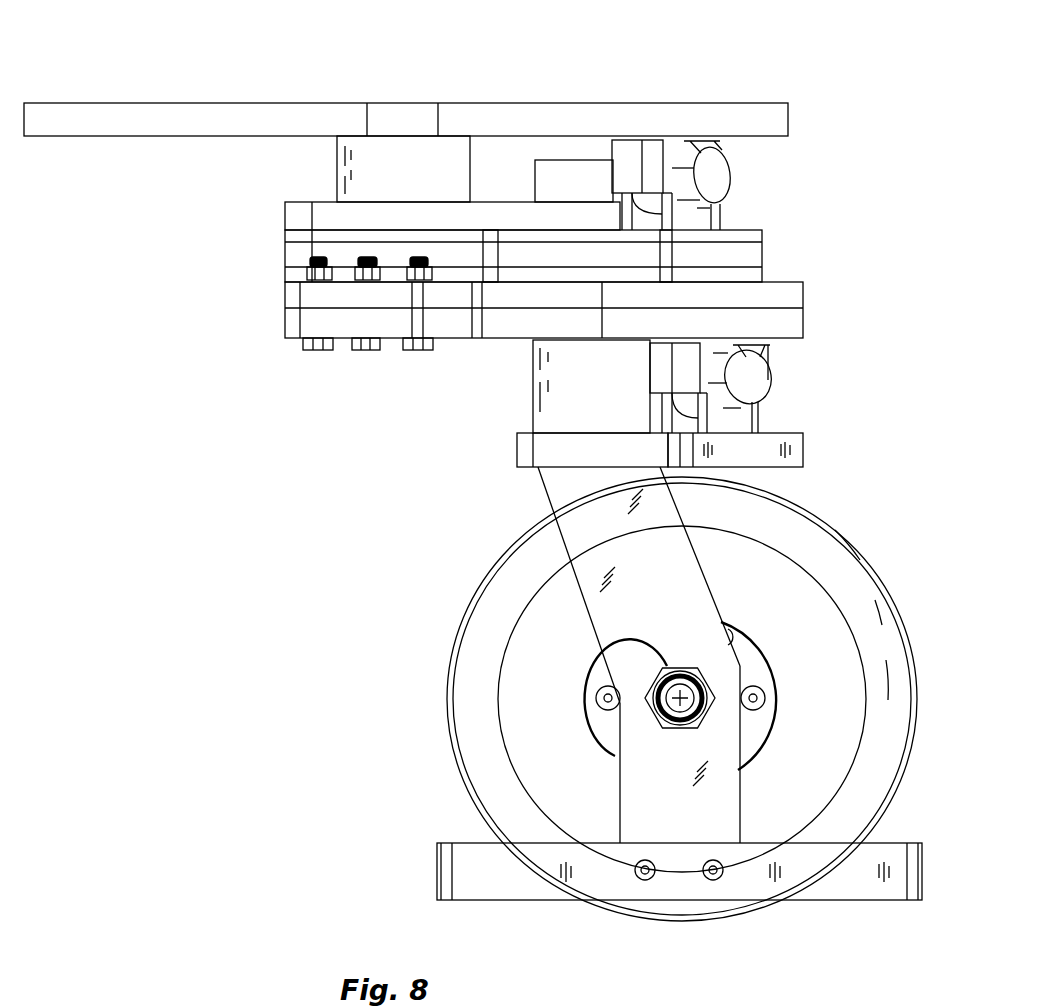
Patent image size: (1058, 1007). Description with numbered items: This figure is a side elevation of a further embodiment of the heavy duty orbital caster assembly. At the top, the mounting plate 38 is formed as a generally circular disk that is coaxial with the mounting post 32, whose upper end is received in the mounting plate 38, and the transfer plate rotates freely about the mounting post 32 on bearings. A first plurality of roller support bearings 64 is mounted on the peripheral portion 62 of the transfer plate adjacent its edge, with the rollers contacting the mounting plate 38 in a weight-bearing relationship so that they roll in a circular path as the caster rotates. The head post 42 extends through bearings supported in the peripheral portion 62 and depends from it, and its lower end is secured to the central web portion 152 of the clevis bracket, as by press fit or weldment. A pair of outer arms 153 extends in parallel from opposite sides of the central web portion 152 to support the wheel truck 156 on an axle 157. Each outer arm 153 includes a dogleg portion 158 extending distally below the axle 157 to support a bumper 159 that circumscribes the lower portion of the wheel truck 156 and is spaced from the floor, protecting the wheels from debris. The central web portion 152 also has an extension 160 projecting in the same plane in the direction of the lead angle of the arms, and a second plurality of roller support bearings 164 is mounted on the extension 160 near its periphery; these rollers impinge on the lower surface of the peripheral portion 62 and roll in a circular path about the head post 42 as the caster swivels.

The mounting plate 38 is at (497, 103).
The mounting post 32 is at (409, 178).
The roller support bearings 64 is at (712, 170).
The peripheral portion 62 is at (492, 340).
The head post 42 is at (604, 393).
The roller support bearings 164 is at (760, 383).
The central web portion 152 is at (553, 453).
The extension 160 is at (803, 449).
The wheel truck 156 is at (430, 599).
The outer arms 153 is at (592, 533).
The axle 157 is at (598, 650).
The dogleg portion 158 is at (660, 773).
The bumper 159 is at (517, 862).